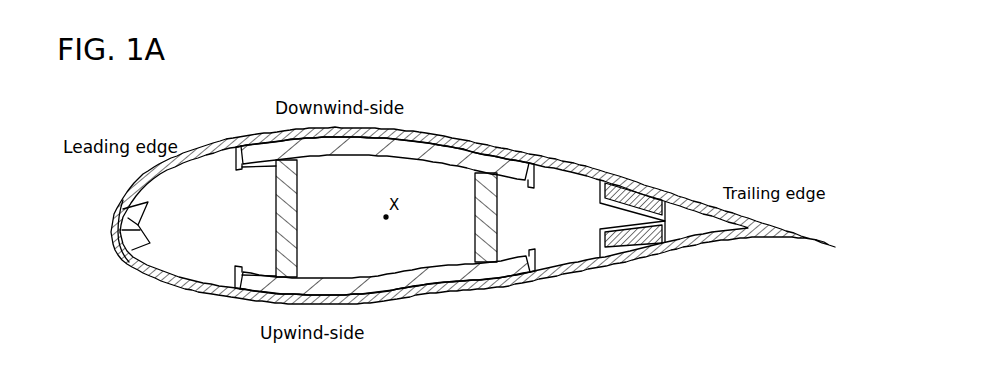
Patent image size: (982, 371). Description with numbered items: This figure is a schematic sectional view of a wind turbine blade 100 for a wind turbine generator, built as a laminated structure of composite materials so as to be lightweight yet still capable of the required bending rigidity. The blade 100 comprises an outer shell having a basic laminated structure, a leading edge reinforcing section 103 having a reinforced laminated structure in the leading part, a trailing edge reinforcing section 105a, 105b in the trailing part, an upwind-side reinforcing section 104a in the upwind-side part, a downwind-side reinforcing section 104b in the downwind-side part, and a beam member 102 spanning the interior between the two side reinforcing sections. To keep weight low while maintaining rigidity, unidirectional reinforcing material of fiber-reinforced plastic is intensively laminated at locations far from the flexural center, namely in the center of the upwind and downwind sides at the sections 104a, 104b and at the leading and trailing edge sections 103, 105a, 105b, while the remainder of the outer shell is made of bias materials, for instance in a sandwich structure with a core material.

The wind turbine blade 100 is at (215, 96).
The beam member 102 is at (487, 220).
The leading edge reinforcing section 103 is at (128, 247).
The upwind-side reinforcing section 104a is at (404, 281).
The downwind-side reinforcing section 104b is at (418, 140).
The trailing edge reinforcing section 105a is at (642, 246).
The trailing edge reinforcing section 105b is at (632, 190).